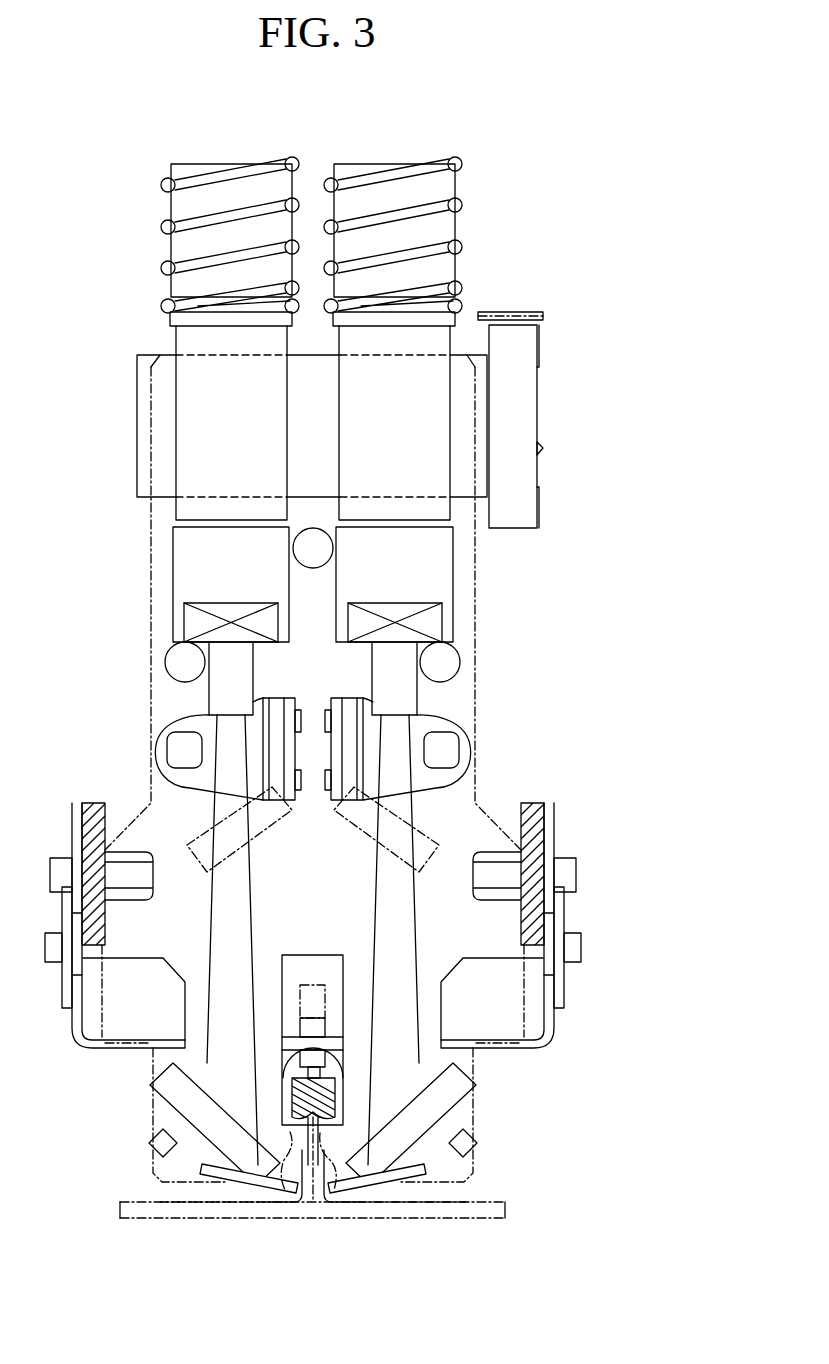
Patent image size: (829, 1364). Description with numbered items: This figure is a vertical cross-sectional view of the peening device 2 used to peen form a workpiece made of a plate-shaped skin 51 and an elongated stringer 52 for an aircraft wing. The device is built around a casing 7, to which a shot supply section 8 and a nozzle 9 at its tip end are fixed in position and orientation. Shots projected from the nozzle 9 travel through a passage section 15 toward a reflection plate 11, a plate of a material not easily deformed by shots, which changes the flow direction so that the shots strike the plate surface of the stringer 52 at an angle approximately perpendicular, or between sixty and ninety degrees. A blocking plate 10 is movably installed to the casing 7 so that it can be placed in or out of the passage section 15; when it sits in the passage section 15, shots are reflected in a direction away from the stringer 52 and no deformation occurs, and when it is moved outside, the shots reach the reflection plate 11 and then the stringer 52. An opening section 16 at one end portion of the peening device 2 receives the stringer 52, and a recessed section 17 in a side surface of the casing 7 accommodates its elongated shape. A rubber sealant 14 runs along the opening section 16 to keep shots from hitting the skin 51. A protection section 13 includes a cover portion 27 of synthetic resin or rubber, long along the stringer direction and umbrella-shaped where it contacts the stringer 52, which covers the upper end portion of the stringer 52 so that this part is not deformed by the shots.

The peening device 2 is at (603, 222).
The casing 7 is at (476, 593).
The shot supply section 8 is at (170, 243).
The nozzle 9 is at (208, 712).
The blocking plate 10 is at (273, 707).
The reflection plate 11 is at (158, 1077).
The protection section 13 is at (349, 1089).
The sealant 14 is at (265, 1188).
The passage section 15 is at (243, 972).
The opening section 16 is at (318, 1177).
The recessed section 17 is at (290, 1132).
The cover portion 27 is at (285, 1070).
The skin 51 is at (445, 1218).
The stringer 52 is at (330, 1130).